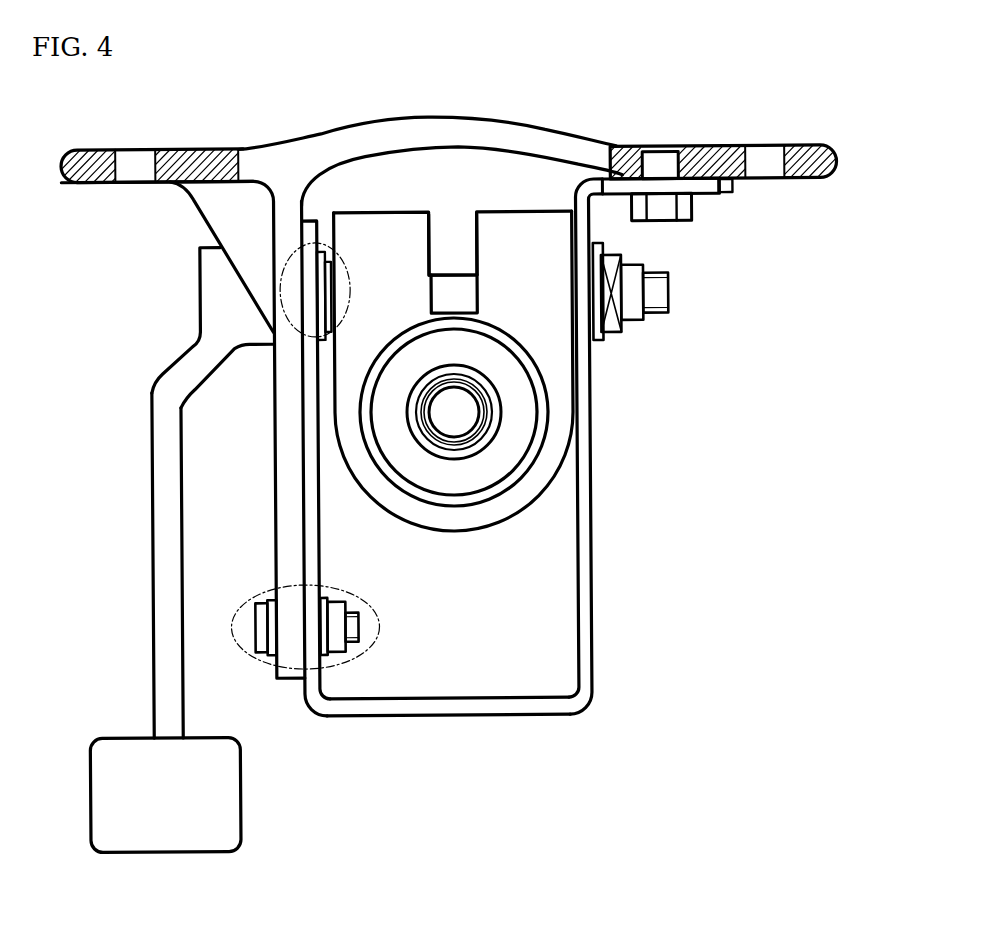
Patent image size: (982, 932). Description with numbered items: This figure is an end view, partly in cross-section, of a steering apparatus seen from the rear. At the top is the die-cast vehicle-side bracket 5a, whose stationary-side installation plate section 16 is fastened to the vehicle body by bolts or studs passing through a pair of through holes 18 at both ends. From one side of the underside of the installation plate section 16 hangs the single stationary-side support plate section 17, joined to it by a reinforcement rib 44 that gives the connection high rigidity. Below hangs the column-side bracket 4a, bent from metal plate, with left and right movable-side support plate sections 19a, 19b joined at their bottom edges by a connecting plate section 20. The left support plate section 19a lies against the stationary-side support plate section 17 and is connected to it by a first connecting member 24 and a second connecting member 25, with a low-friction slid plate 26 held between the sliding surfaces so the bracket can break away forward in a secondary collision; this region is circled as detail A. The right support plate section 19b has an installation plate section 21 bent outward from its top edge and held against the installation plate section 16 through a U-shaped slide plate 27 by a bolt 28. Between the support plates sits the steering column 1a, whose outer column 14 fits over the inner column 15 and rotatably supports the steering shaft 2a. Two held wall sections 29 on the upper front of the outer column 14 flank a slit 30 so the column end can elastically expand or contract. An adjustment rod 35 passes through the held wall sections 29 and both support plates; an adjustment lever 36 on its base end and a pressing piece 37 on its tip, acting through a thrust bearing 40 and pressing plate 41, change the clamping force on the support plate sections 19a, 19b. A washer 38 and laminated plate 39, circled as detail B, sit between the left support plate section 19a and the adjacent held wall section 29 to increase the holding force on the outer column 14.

The steering column 1a is at (378, 481).
The steering shaft 2a is at (492, 400).
The column-side bracket 4a is at (615, 447).
The vehicle-side bracket 5a is at (506, 113).
The outer column 14 is at (498, 333).
The inner column 15 is at (483, 497).
The stationary-side installation plate section 16 is at (429, 126).
The stationary-side support plate section 17 is at (183, 517).
The through holes 18 is at (132, 162).
The movable-side support plate section 19a is at (318, 518).
The movable-side support plate section 19b is at (585, 470).
The connecting plate section 20 is at (487, 708).
The installation plate section 21 is at (728, 190).
The first connecting member 24 is at (334, 606).
The second connecting member 25 is at (264, 636).
The slid plate 26 is at (270, 609).
The slide plate 27 is at (703, 198).
The bolt 28 is at (662, 206).
The held wall sections 29 is at (378, 224).
The slit 30 is at (476, 231).
The adjustment rod 35 is at (445, 284).
The adjustment lever 36 is at (168, 482).
The pressing piece 37 is at (633, 295).
The washer 38 is at (325, 262).
The laminated plate 39 is at (318, 258).
The thrust bearing 40 is at (619, 318).
The pressing plate 41 is at (604, 247).
The reinforcement rib 44 is at (222, 208).
The detail region A is at (240, 650).
The detail region B is at (292, 275).